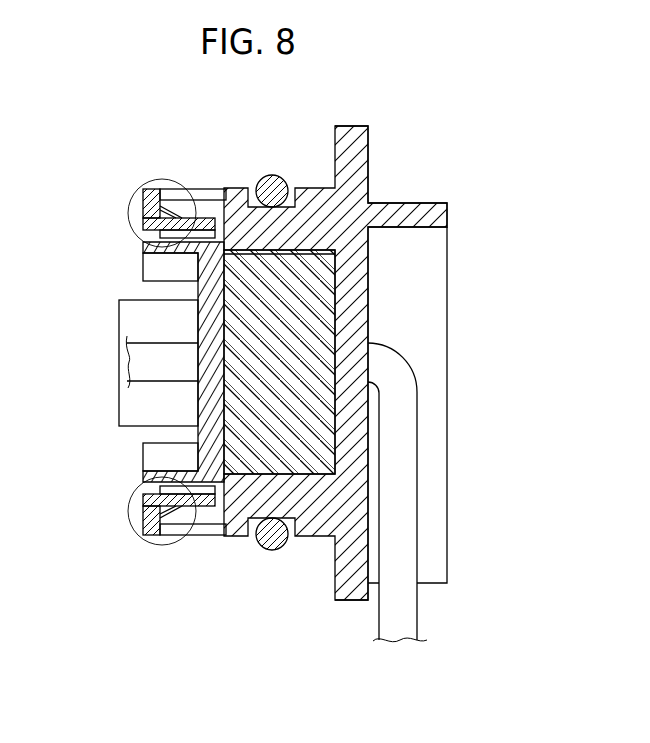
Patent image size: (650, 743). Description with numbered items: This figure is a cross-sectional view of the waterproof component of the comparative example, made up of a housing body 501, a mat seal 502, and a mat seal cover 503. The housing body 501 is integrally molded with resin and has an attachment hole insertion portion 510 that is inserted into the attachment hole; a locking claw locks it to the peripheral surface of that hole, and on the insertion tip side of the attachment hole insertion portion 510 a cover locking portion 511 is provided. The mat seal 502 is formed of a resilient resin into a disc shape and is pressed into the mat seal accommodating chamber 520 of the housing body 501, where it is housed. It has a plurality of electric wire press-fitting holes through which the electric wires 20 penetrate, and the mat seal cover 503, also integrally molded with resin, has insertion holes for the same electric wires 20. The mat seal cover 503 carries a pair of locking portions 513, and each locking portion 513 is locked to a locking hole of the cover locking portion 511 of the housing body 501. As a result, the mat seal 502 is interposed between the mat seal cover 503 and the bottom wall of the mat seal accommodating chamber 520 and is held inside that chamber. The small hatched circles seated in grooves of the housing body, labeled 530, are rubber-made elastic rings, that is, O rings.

The electric wires 20 is at (413, 460).
The housing body 501 is at (354, 125).
The mat seal 502 is at (297, 323).
The mat seal cover 503 is at (192, 292).
The attachment hole insertion portion 510 is at (321, 187).
The cover locking portion 511 is at (128, 219).
The locking portion 513 is at (181, 207).
The mat seal accommodating chamber 520 is at (300, 256).
The O-ring 530 is at (272, 175).